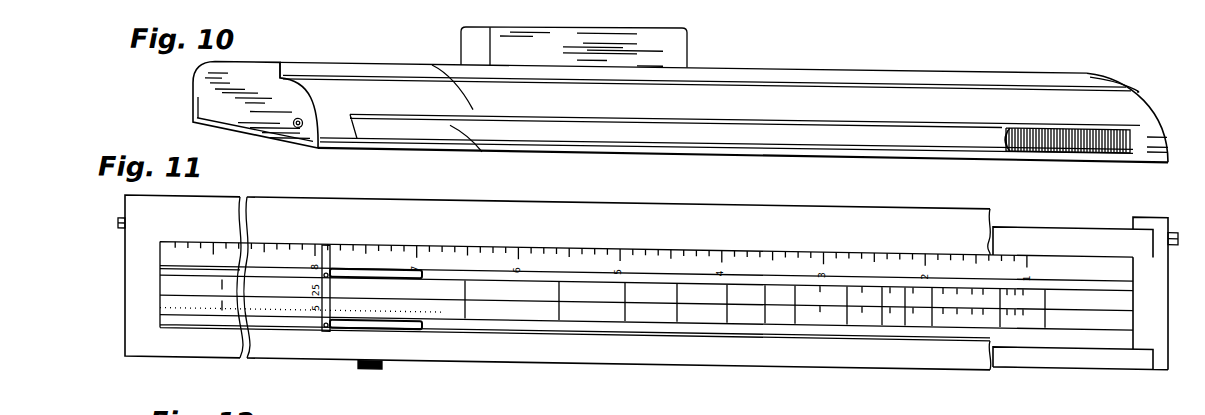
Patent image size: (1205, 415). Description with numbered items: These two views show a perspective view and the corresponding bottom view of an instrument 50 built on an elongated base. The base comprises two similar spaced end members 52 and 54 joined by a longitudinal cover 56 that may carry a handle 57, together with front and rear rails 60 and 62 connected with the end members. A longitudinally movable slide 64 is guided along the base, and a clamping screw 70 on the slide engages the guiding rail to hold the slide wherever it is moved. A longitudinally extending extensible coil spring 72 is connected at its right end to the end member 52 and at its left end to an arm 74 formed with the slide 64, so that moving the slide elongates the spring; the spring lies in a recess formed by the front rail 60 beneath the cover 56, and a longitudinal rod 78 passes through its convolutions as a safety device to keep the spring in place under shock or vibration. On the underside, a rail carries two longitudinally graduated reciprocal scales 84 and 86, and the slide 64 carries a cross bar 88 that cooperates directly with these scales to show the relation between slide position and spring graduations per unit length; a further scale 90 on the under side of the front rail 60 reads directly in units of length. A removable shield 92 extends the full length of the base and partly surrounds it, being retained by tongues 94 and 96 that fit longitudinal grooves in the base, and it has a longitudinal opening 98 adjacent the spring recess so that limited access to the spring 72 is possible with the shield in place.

In FIG. 10, the instrument 50 is at (763, 54).
In FIG. 10, the end member 52 is at (1105, 72).
In FIG. 10, the end member 54 is at (200, 81).
In FIG. 10, the longitudinal cover 56 is at (853, 65).
In FIG. 10, the handle 57 is at (690, 28).
In FIG. 11, the front rail 60 is at (1007, 219).
In FIG. 11, the rear rail 62 is at (1035, 340).
In FIG. 11, the slide 64 is at (388, 271).
In FIG. 11, the clamping screw 70 is at (383, 361).
In FIG. 10, the extensible spring 72 is at (1058, 138).
In FIG. 10, the arm 74 is at (1002, 126).
In FIG. 10, the longitudinal rod 78 is at (683, 116).
In FIG. 11, the scale 84 is at (1090, 283).
In FIG. 11, the scale 86 is at (1110, 307).
In FIG. 11, the cross bar 88 is at (330, 257).
In FIG. 11, the scale 90 is at (1060, 251).
In FIG. 10, the shield 92 is at (237, 128).
In FIG. 11, the shield 92 is at (607, 190).
In FIG. 10, the tongue 94 is at (197, 100).
In FIG. 10, the tongue 96 is at (280, 74).
In FIG. 10, the longitudinal opening 98 is at (872, 111).